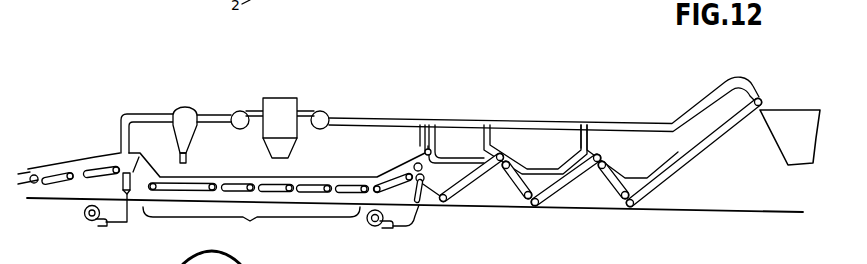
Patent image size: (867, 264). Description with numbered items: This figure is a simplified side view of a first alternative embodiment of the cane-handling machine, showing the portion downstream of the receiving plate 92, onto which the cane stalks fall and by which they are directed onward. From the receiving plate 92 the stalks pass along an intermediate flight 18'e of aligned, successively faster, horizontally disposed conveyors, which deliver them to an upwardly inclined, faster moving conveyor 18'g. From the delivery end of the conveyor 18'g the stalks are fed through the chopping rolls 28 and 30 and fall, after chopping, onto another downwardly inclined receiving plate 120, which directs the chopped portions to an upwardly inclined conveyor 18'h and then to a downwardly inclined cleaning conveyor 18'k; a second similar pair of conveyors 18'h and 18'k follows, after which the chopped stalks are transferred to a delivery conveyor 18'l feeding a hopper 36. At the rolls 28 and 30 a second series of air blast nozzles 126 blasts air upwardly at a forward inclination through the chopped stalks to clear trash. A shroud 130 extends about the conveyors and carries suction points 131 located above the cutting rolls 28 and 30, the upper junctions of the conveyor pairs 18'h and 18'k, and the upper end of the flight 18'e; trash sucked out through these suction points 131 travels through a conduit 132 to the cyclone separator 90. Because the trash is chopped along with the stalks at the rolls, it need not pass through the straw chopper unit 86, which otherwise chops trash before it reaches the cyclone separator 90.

The straw chopper unit 86 is at (180, 107).
The cyclone separator 90 is at (290, 105).
The conduit 132 is at (400, 120).
The suction points 131 is at (436, 152).
The chopping roll 28 is at (430, 150).
The shroud 130 is at (366, 177).
The intermediate flight of conveyors 18'e is at (251, 229).
The receiving plate 92 is at (138, 174).
The chopping roll 30 is at (392, 190).
The upwardly inclined conveyor 18'g is at (405, 219).
The receiving plate 120 is at (428, 183).
The air blast nozzles 126 is at (423, 186).
The upwardly inclined conveyor 18'h is at (521, 205).
The cleaning conveyor 18'k is at (567, 210).
The delivery conveyor 18'l is at (693, 179).
The hopper 36 is at (795, 110).